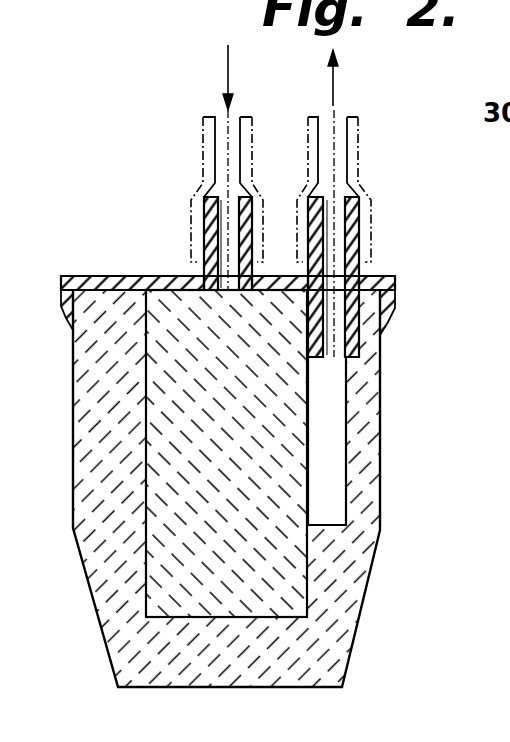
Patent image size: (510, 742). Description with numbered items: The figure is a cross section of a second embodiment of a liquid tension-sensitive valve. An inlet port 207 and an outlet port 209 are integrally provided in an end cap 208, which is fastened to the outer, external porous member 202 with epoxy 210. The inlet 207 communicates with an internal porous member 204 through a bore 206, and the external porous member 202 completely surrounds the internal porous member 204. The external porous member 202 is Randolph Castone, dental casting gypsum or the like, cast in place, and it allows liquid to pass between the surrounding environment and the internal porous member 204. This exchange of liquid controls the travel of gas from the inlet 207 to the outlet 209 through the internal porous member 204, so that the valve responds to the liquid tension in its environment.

The external porous member 202 is at (371, 412).
The internal porous member 204 is at (272, 562).
The bore 206 is at (335, 486).
The inlet port 207 is at (208, 218).
The end cap 208 is at (135, 285).
The outlet port 209 is at (355, 218).
The epoxy 210 is at (66, 311).